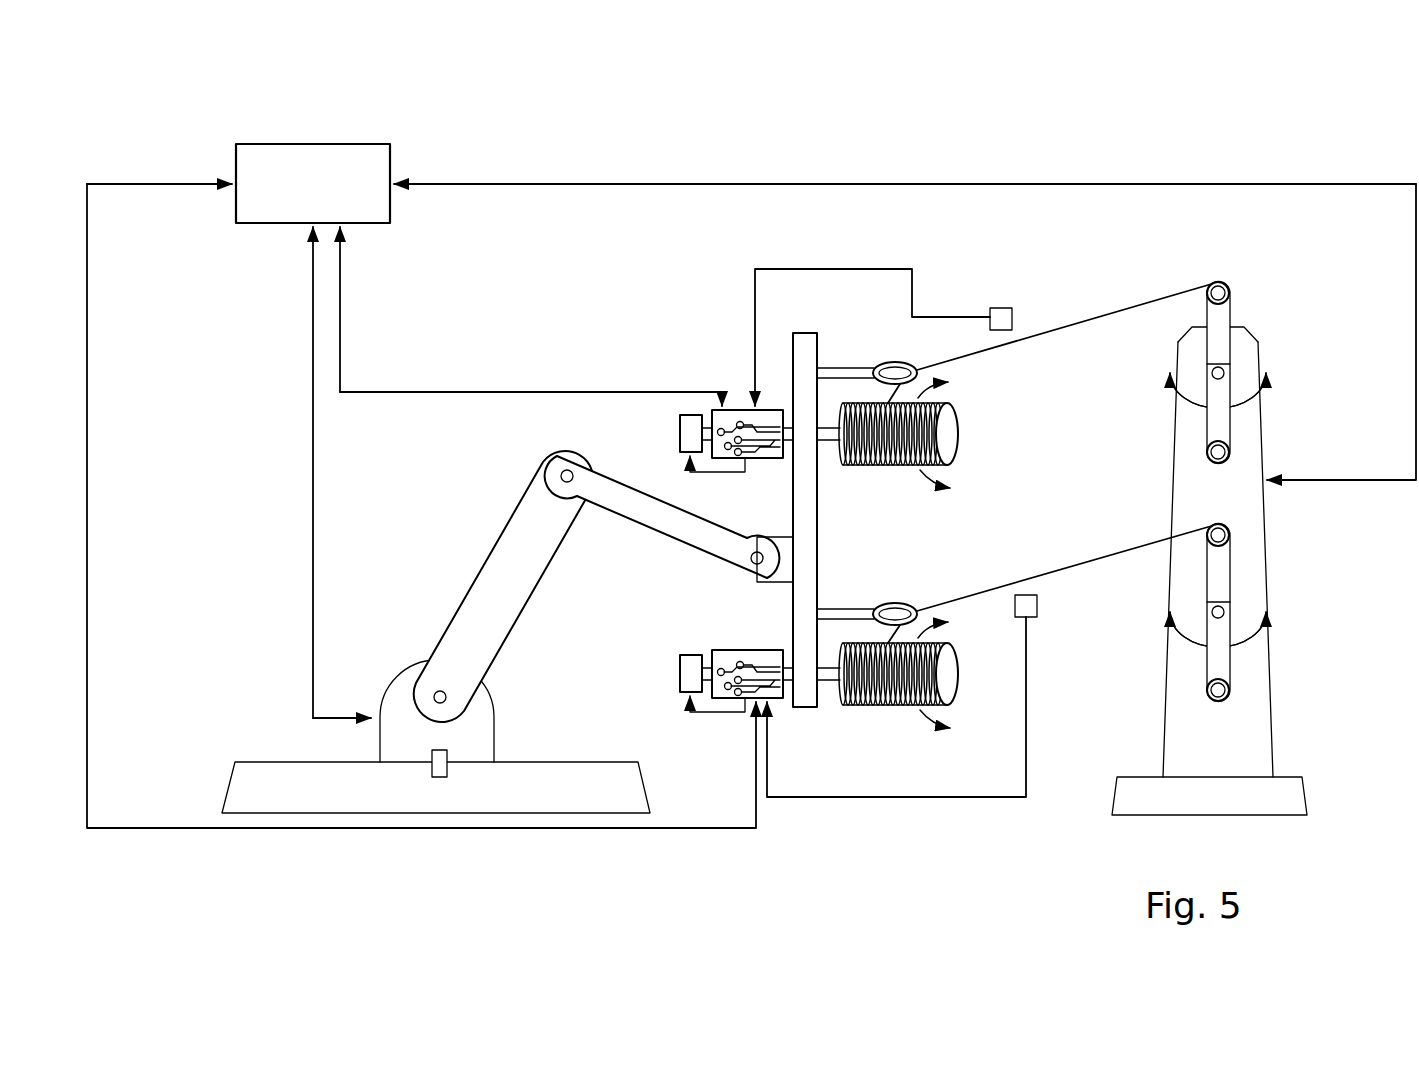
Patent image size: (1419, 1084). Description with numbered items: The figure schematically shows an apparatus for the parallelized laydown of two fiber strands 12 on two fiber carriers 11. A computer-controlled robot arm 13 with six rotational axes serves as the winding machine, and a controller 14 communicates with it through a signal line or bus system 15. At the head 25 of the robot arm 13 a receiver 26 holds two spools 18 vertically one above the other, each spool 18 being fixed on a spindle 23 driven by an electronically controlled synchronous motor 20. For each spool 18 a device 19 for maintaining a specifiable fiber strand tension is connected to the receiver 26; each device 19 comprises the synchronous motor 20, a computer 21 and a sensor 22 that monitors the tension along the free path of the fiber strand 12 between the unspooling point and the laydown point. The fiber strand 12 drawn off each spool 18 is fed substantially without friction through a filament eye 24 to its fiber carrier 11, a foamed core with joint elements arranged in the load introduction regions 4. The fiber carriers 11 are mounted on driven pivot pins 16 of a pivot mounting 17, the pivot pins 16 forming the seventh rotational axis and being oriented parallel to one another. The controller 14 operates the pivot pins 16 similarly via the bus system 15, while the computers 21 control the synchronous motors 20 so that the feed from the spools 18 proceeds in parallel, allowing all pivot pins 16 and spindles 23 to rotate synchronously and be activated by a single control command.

The load introduction region 4 is at (1222, 285).
The fiber carrier 11 is at (1230, 320).
The fiber strand 12 is at (1062, 318).
The robot arm 13 is at (492, 535).
The controller 14 is at (322, 160).
The bus system 15 is at (568, 178).
The pivot pin 16 is at (1225, 372).
The pivot mounting 17 is at (1250, 505).
The spool 18 is at (950, 436).
The device for maintaining fiber strand tension 19 is at (690, 485).
The synchronous motor 20 is at (680, 434).
The computer 21 is at (752, 408).
The sensor 22 is at (1002, 306).
The spindle 23 is at (832, 432).
The filament eye 24 is at (888, 364).
The head 25 is at (773, 470).
The receiver 26 is at (803, 557).